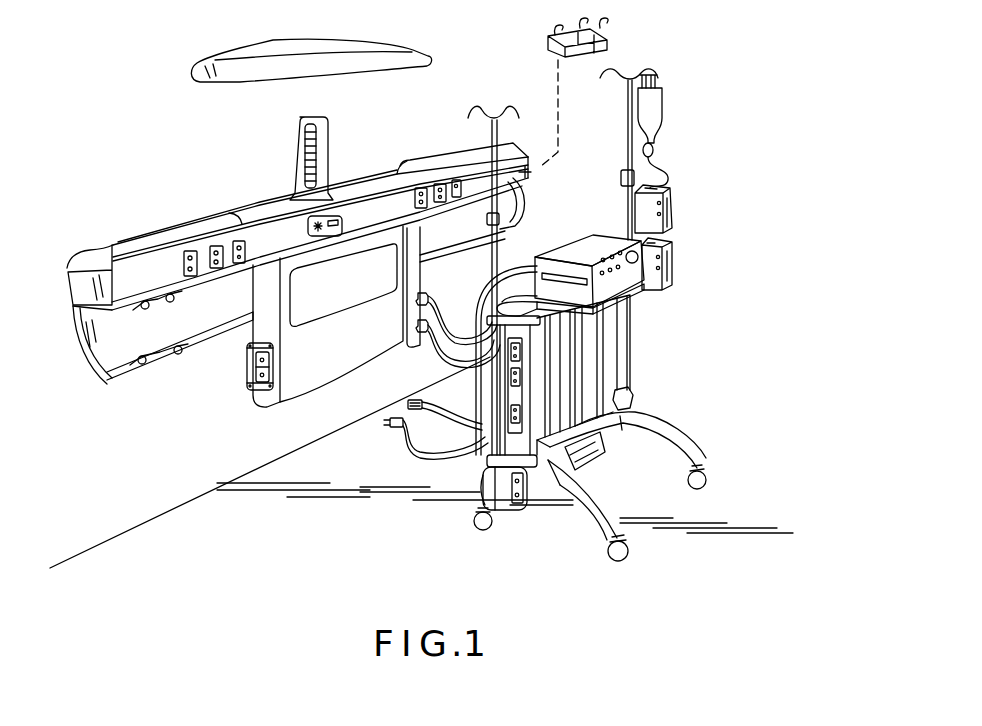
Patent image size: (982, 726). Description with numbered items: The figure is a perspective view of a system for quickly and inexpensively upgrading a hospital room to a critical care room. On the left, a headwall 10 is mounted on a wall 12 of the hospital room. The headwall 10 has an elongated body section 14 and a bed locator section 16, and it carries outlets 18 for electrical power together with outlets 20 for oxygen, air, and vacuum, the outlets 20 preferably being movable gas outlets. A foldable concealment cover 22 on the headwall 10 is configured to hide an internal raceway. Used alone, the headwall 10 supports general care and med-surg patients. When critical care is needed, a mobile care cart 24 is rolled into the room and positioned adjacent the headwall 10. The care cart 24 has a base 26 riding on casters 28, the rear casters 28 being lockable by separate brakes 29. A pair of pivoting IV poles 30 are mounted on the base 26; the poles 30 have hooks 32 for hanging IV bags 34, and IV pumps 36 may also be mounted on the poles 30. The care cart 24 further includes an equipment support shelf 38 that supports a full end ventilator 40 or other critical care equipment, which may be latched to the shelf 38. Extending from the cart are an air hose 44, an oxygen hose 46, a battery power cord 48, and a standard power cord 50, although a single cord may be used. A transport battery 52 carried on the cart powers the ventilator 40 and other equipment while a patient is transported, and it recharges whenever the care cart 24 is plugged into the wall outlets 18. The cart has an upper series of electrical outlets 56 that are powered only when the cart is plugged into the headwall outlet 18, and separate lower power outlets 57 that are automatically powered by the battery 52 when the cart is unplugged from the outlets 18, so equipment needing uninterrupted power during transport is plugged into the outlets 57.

The headwall 10 is at (117, 208).
The wall 12 is at (89, 455).
The elongated body section 14 is at (80, 347).
The bed locator section 16 is at (330, 341).
The outlets 18 is at (217, 244).
The outlets 20 is at (182, 367).
The foldable concealment cover 22 is at (163, 234).
The care cart 24 is at (703, 225).
The base 26 is at (644, 406).
The casters 28 is at (483, 533).
The brakes 29 is at (483, 508).
The IV poles 30 is at (636, 348).
The hooks 32 is at (644, 70).
The IV bags 34 is at (655, 108).
The IV pumps 36 is at (673, 193).
The equipment support shelf 38 is at (643, 287).
The ventilator 40 is at (576, 235).
The air hose 44 is at (429, 299).
The oxygen hose 46 is at (432, 353).
The battery power cord 48 is at (424, 405).
The standard power cord 50 is at (417, 443).
The transport battery 52 is at (595, 471).
The electrical outlets 56 is at (522, 380).
The power outlets 57 is at (524, 504).